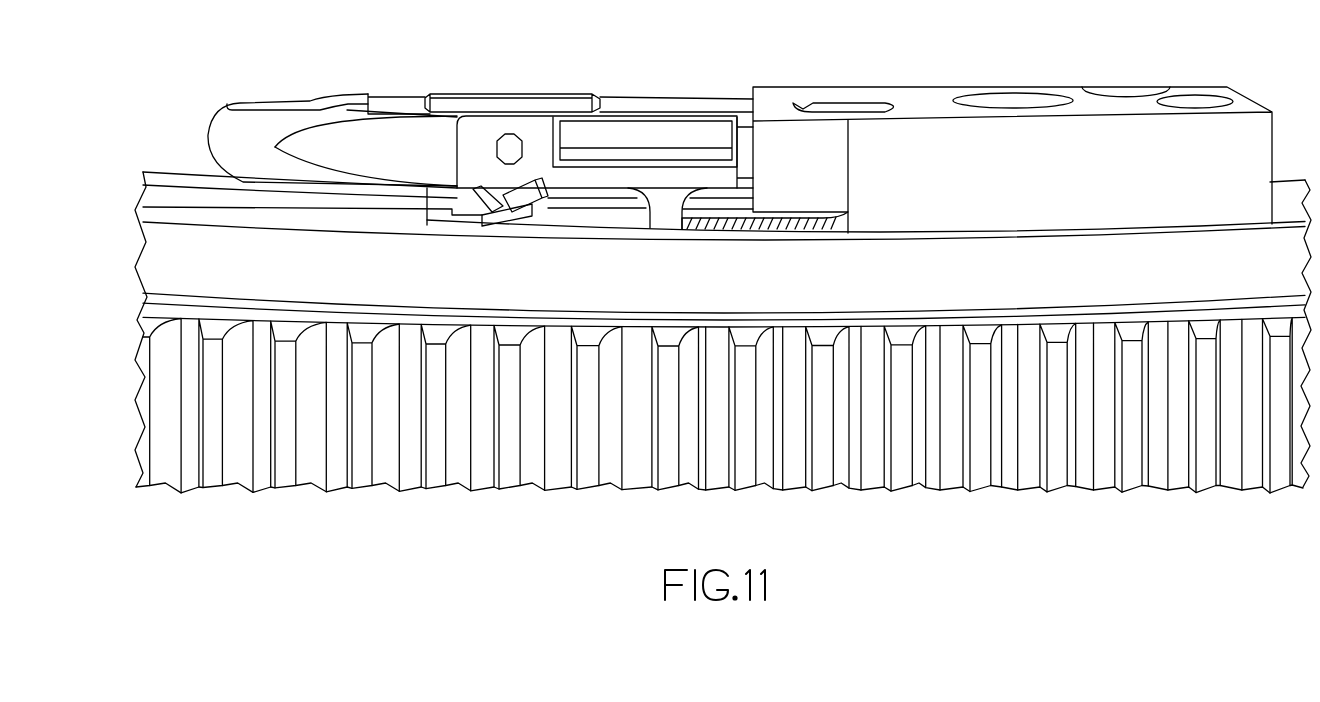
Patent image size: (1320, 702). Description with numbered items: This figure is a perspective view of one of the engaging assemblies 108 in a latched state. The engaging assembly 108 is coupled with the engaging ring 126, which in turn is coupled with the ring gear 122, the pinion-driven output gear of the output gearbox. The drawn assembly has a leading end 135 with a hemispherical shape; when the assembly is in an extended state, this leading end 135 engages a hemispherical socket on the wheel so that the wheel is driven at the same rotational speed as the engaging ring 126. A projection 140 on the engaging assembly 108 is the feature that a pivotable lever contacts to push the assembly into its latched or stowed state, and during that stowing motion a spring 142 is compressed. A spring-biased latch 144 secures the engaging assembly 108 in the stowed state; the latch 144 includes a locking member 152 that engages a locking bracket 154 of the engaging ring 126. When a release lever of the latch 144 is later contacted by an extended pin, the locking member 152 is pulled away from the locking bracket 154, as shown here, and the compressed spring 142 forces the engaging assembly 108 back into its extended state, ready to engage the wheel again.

The engaging assembly 108 is at (511, 100).
The ring gear 122 is at (160, 375).
The engaging ring 126 is at (150, 257).
The leading end 135 is at (243, 103).
The projection 140 is at (362, 93).
The spring 142 is at (767, 227).
The spring-biased latch 144 is at (532, 203).
The locking member 152 is at (515, 223).
The locking bracket 154 is at (440, 213).